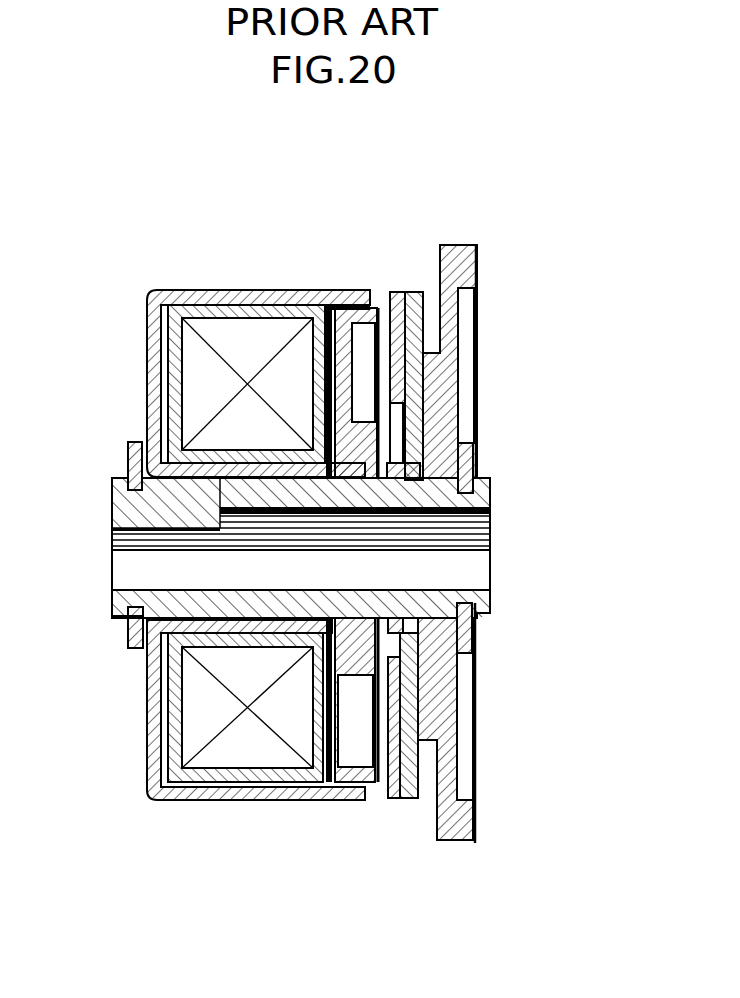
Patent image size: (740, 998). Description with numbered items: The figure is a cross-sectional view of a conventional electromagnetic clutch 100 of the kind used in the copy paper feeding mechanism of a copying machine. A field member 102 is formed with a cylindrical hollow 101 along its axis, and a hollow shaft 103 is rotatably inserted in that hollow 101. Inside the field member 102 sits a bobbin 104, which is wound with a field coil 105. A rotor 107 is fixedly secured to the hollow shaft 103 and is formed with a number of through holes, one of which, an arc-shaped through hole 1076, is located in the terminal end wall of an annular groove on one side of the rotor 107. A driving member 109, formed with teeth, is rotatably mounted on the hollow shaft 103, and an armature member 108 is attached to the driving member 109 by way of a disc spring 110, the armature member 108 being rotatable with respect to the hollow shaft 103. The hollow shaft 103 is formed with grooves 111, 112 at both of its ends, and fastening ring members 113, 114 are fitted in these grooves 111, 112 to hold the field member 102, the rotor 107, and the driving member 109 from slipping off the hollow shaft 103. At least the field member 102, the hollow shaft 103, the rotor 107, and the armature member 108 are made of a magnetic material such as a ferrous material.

The electromagnetic clutch 100 is at (338, 191).
The cylindrical hollow 101 is at (248, 473).
The field member 102 is at (216, 290).
The hollow shaft 103 is at (112, 498).
The bobbin 104 is at (167, 405).
The field coil 105 is at (160, 353).
The rotor 107 is at (378, 308).
The armature member 108 is at (386, 797).
The driving member 109 is at (462, 823).
The disc spring 110 is at (410, 800).
The groove 111 is at (127, 622).
The groove 112 is at (475, 632).
The fastening ring member 113 is at (145, 648).
The fastening ring member 114 is at (473, 650).
The through hole 1076 is at (340, 748).